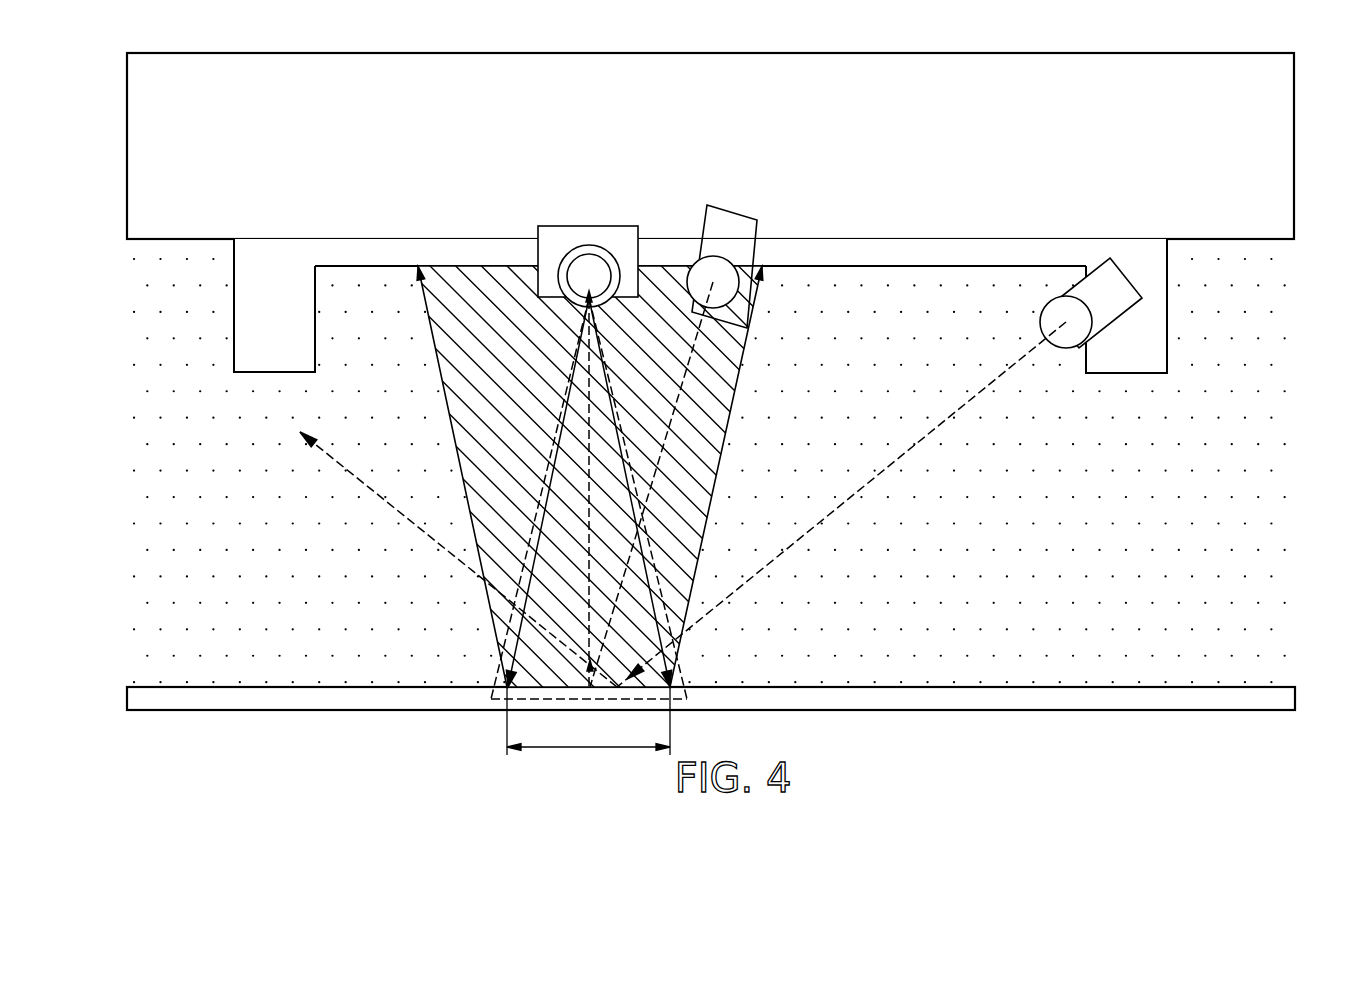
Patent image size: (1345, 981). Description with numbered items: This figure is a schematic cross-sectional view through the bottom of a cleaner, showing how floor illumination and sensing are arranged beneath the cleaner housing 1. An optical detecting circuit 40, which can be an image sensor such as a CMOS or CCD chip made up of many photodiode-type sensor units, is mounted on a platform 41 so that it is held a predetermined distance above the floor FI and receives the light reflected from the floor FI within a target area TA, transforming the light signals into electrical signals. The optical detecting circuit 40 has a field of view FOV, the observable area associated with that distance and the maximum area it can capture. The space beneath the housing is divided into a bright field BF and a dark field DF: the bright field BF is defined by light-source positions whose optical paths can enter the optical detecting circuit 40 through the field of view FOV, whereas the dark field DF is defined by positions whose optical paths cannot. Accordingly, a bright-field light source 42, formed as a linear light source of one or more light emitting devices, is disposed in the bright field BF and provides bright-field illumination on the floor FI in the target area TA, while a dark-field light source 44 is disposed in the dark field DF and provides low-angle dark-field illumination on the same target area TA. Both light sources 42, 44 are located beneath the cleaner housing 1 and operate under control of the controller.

The cleaner housing 1 is at (1275, 240).
The optical detecting circuit 40 is at (589, 226).
The platform 41 is at (265, 248).
The bright-field light source 42 is at (704, 224).
The dark-field light source 44 is at (1112, 258).
The bright field BF is at (457, 274).
The dark field DF is at (147, 645).
The finger / imaged object FI is at (1272, 686).
The field of view FOV is at (689, 700).
The target area TA is at (588, 735).